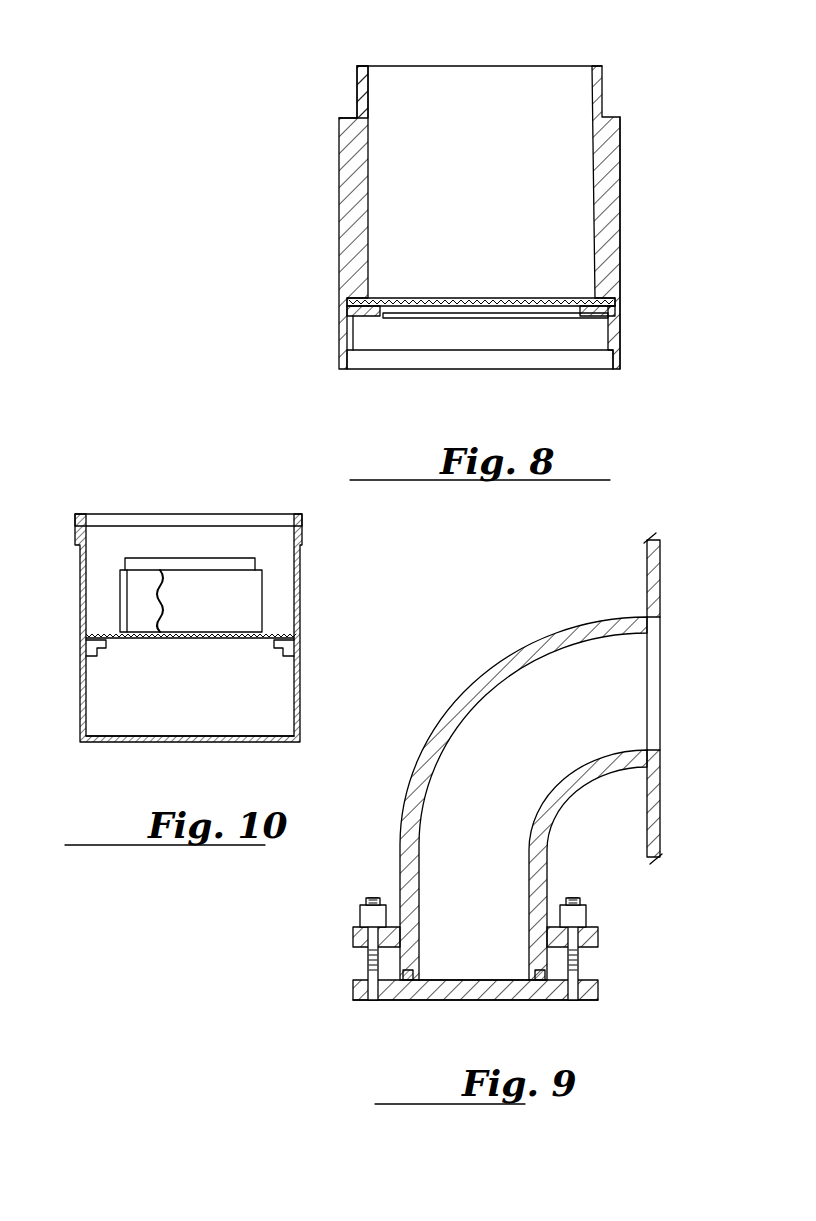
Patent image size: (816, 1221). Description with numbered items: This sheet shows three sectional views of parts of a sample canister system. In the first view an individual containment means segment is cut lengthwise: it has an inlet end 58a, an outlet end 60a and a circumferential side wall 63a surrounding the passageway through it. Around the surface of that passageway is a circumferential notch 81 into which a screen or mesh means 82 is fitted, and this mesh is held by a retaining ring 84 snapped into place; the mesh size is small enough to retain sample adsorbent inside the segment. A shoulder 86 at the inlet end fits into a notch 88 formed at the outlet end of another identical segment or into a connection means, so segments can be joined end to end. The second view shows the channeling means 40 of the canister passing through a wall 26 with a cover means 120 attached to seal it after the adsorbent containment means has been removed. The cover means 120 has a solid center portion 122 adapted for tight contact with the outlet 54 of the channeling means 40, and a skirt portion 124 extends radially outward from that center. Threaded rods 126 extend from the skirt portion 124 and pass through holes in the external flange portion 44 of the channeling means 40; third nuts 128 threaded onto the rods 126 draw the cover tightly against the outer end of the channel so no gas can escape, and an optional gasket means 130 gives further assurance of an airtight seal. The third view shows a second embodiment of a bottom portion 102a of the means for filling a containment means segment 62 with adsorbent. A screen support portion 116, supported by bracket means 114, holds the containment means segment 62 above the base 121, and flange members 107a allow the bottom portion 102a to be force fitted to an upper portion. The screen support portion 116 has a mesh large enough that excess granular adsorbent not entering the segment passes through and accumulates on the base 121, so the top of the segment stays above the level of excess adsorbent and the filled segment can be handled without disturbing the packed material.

In FIG. 8, the inlet end 58a is at (512, 62).
In FIG. 8, the shoulder 86 is at (356, 84).
In FIG. 8, the containment means segment 62 is at (620, 184).
In FIG. 10, the containment means segment 62 is at (245, 606).
In FIG. 8, the circumferential side wall 63a is at (612, 228).
In FIG. 8, the circumferential notch 81 is at (624, 301).
In FIG. 8, the screen or mesh means 82 is at (497, 308).
In FIG. 8, the retaining ring 84 is at (590, 318).
In FIG. 8, the notch 88 is at (372, 340).
In FIG. 8, the outlet end 60a is at (418, 371).
In FIG. 10, the flange members 107a is at (72, 514).
In FIG. 10, the bottom portion 102a is at (300, 590).
In FIG. 10, the screen support portion 116 is at (130, 640).
In FIG. 10, the bracket means 114 is at (95, 648).
In FIG. 10, the base 121 is at (162, 737).
In FIG. 9, the wall 26 is at (645, 578).
In FIG. 9, the channeling means 40 is at (490, 686).
In FIG. 9, the solid center portion 122 is at (457, 1001).
In FIG. 9, the outlet 54 is at (470, 980).
In FIG. 9, the skirt portion 124 is at (385, 1001).
In FIG. 9, the threaded rods 126 is at (372, 960).
In FIG. 9, the external flange portion 44 is at (600, 937).
In FIG. 9, the third nuts 128 is at (358, 914).
In FIG. 9, the gasket means 130 is at (408, 982).
In FIG. 9, the cover means 120 is at (512, 1001).